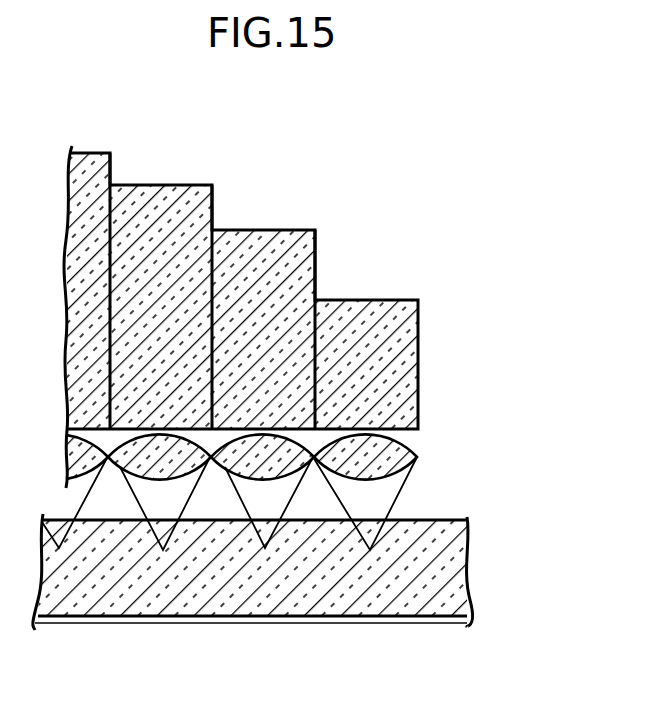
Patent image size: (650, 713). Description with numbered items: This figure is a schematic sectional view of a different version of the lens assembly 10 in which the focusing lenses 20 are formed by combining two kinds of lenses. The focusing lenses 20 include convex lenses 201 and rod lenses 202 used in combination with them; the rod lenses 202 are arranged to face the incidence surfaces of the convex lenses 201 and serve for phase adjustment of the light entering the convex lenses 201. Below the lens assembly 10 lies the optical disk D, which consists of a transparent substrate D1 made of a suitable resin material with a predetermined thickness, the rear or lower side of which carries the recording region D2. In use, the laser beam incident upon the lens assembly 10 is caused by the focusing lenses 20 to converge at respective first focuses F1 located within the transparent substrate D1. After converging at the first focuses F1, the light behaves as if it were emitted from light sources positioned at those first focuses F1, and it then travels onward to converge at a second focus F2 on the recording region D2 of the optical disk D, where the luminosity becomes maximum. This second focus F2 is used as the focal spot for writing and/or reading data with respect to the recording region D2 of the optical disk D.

The lens assembly 10 is at (262, 303).
The focusing lenses 20 is at (291, 302).
The rod lenses 202 is at (418, 350).
The convex lenses 201 is at (417, 457).
The optical disk D is at (287, 599).
The transparent substrate D1 is at (467, 588).
The recording region D2 is at (430, 612).
The first focuses F1 is at (370, 550).
The second focus F2 is at (265, 548).